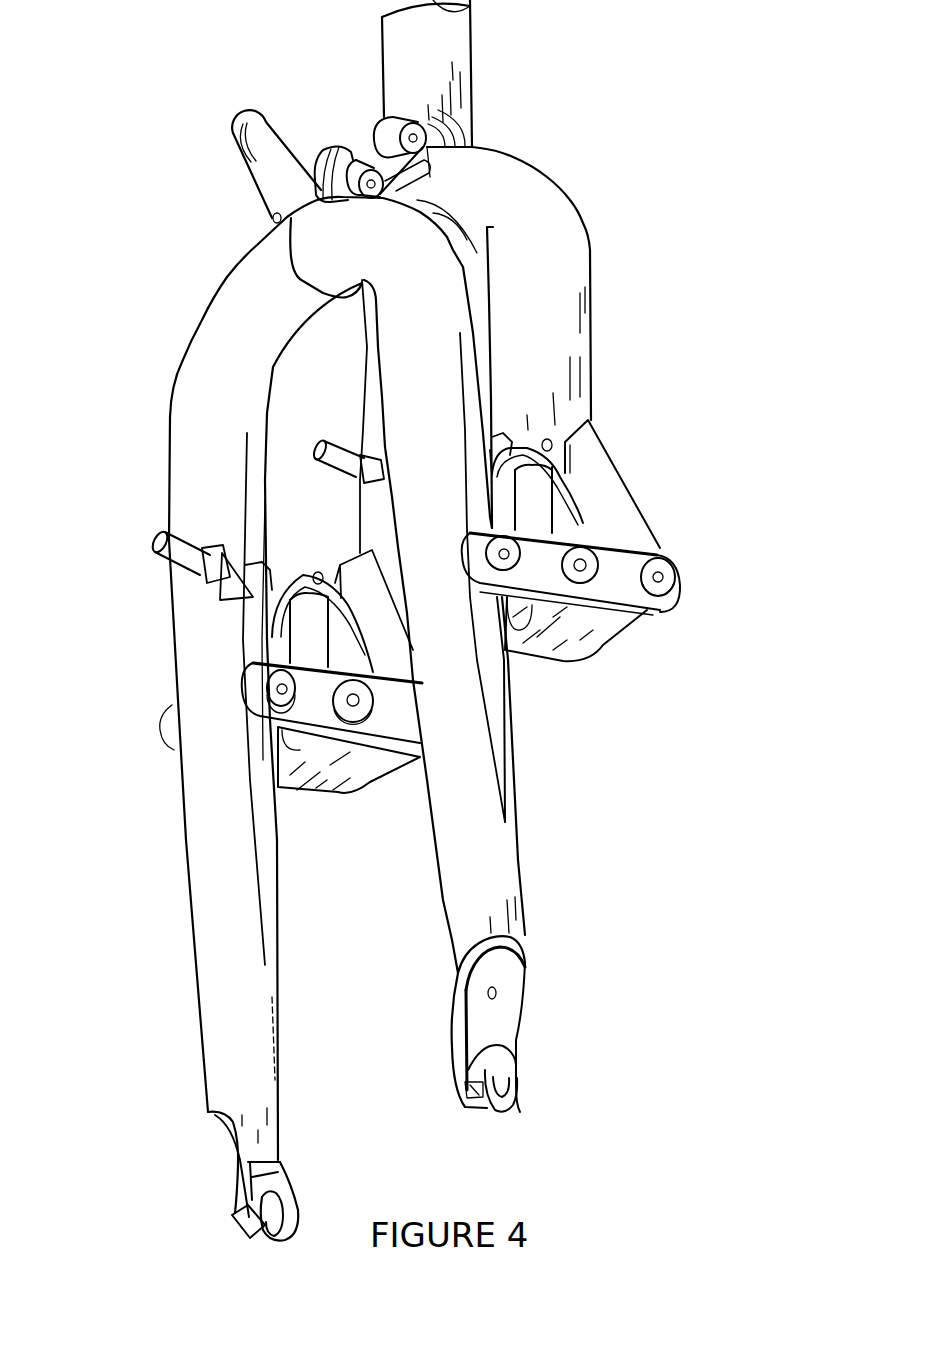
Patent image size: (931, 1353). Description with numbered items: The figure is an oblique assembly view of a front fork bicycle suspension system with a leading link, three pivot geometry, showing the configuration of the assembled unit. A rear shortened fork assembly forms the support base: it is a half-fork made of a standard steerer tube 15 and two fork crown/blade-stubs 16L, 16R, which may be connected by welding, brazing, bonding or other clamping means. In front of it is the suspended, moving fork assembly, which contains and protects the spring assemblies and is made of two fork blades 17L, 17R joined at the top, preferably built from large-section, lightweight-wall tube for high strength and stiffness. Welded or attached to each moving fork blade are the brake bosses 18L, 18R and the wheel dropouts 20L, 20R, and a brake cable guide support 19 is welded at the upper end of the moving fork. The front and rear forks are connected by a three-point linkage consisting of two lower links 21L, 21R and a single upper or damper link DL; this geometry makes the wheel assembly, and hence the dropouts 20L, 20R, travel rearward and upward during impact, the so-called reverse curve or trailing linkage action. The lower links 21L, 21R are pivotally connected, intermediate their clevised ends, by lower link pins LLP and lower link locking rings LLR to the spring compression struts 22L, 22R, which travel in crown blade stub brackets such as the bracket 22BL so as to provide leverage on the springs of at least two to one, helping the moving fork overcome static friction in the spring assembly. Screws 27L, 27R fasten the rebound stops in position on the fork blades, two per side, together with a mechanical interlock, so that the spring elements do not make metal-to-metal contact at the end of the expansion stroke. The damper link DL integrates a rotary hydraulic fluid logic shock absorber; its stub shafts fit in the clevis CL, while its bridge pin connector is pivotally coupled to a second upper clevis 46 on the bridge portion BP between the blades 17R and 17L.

The steerer tube 15 is at (427, 67).
The upper or damper link DL is at (367, 160).
The brake cable guide support 19 is at (250, 126).
The second upper clevis 46 is at (325, 158).
The bridge portion BP is at (307, 242).
The clevis CL is at (430, 177).
The fork crown/blade-stub 16R is at (323, 343).
The fork crown/blade-stub 16L is at (532, 225).
The fork blade 17R is at (213, 377).
The fork blade 17L is at (452, 293).
The brake boss 18R is at (233, 587).
The brake boss 18L is at (390, 457).
The screw 27R is at (317, 571).
The screw 27L is at (551, 439).
The spring compression strut 22R is at (303, 622).
The spring compression strut 22L is at (535, 505).
The crown blade stub bracket 22BL is at (627, 535).
The lower link pin LLP is at (510, 557).
The lower link locking ring LLR is at (290, 703).
The lower link 21R is at (317, 767).
The lower link 21L is at (558, 632).
The wheel dropout 20R is at (240, 1168).
The wheel dropout 20L is at (495, 1027).